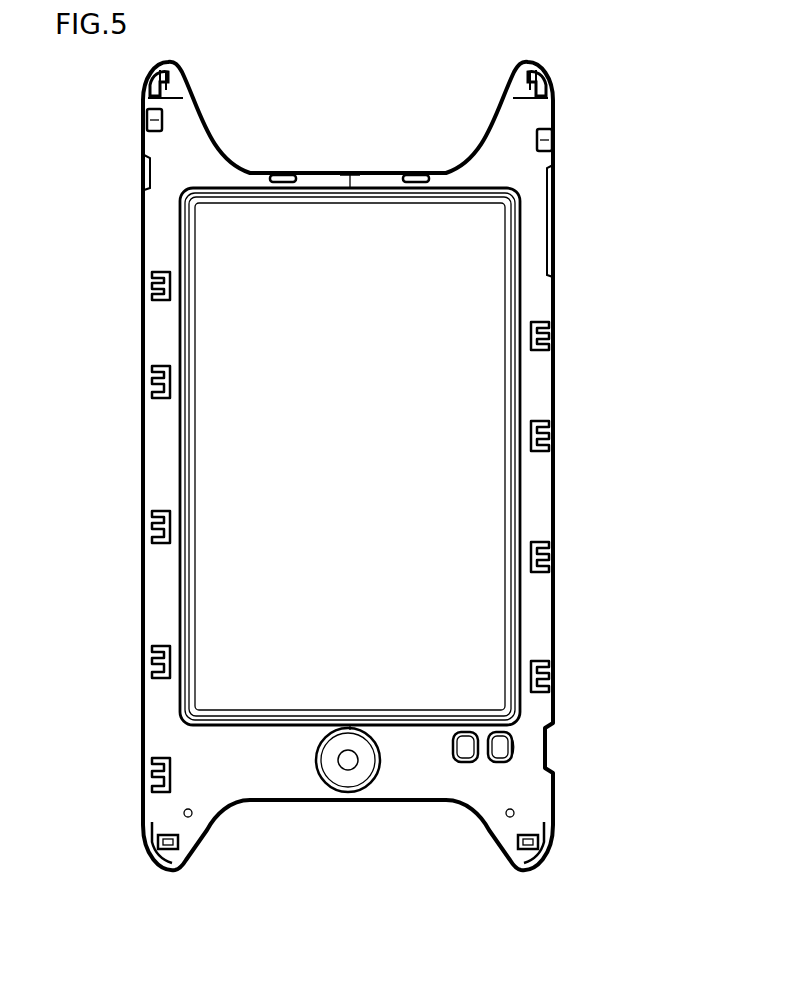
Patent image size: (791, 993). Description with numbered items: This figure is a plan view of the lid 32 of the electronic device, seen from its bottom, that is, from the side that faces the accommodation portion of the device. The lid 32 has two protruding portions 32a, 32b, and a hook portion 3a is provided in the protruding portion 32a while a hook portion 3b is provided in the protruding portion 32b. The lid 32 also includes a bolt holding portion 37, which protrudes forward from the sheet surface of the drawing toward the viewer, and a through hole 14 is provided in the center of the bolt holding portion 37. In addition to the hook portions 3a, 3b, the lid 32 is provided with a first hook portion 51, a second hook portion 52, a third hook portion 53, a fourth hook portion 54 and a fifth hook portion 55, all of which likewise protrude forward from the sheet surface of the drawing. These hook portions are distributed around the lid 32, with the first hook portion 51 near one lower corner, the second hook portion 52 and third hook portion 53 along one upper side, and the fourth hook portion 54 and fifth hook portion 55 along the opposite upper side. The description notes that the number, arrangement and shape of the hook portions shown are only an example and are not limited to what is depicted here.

The lid 32 is at (467, 80).
The third hook portion 53 is at (150, 94).
The second hook portion 52 is at (147, 121).
The fifth hook portion 55 is at (552, 94).
The fourth hook portion 54 is at (552, 139).
The first hook portion 51 is at (152, 775).
The bolt holding portion 37 is at (362, 779).
The through hole 14 is at (337, 763).
The protruding portion 32a is at (516, 827).
The protruding portion 32b is at (180, 827).
The hook portion 3a is at (522, 864).
The hook portion 3b is at (176, 863).